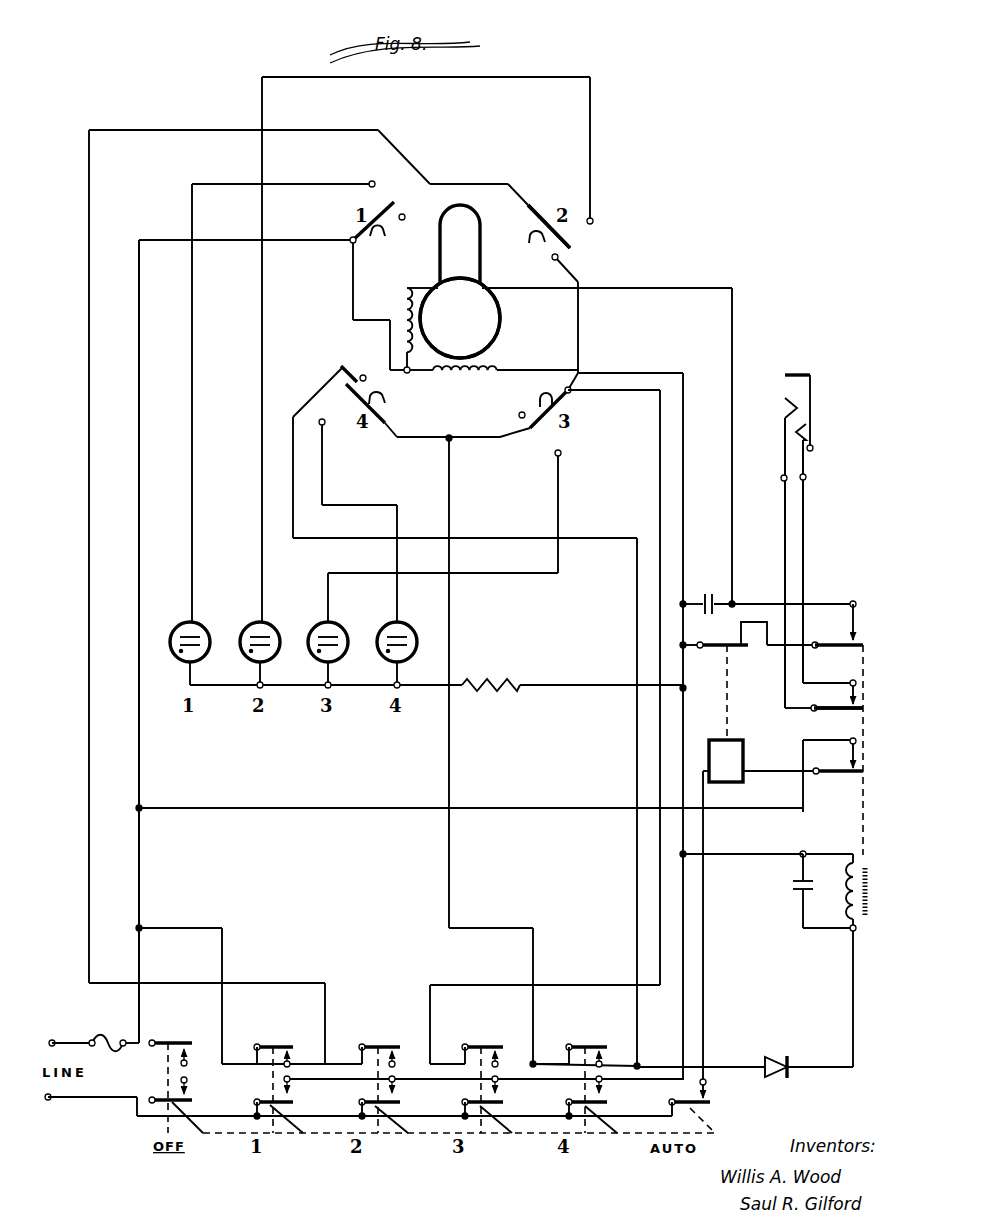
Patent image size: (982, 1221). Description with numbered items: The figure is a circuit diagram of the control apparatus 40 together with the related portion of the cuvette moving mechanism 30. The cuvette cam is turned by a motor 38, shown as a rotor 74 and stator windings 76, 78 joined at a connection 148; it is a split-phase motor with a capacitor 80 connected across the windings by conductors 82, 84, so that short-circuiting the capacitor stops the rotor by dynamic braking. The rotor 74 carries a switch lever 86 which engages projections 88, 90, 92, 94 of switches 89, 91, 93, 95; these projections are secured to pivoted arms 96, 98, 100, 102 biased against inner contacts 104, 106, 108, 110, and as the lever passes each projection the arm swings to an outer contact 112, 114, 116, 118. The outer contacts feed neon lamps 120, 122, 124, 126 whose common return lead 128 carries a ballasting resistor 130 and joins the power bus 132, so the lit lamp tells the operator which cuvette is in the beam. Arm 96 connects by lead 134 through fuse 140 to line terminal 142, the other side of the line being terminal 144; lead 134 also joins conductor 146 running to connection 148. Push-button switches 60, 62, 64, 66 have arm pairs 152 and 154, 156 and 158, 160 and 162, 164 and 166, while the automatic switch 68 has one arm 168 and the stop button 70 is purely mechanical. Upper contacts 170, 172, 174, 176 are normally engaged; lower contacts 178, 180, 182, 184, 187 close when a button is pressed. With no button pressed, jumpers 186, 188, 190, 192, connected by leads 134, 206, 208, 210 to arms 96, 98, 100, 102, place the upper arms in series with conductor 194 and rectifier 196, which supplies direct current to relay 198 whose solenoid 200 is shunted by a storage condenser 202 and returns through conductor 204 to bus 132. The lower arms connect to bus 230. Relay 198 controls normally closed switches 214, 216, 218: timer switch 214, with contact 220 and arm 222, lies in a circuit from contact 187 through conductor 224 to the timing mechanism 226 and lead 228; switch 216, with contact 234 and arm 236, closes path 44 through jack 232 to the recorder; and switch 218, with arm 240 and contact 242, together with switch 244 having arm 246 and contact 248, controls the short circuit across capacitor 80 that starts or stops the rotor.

The cuvette moving mechanism 30 is at (606, 128).
The motor 38 is at (522, 300).
The control apparatus 40 is at (165, 1168).
The conducting path 44 is at (802, 530).
The switch button 60 is at (237, 1140).
The switch button 62 is at (343, 1148).
The switch button 64 is at (478, 1150).
The switch button 66 is at (607, 1148).
The automatic switch button 68 is at (718, 1108).
The stop button 70 is at (160, 1050).
The rotor 74 is at (502, 318).
The stator winding 76 is at (405, 305).
The stator winding 78 is at (470, 377).
The capacitor 80 is at (705, 594).
The conductor 82 is at (683, 373).
The conductor 84 is at (732, 288).
The switch lever 86 is at (483, 226).
The projection 88 is at (386, 236).
The switch 89 is at (412, 160).
The projection 90 is at (532, 238).
The switch 91 is at (587, 246).
The projection 92 is at (540, 398).
The switch 93 is at (572, 400).
The projection 94 is at (386, 405).
The switch 95 is at (380, 428).
The pivoted arm 96 is at (372, 178).
The pivoted arm 98 is at (572, 250).
The pivoted arm 100 is at (545, 432).
The pivoted arm 102 is at (340, 366).
The inner contact 104 is at (404, 214).
The inner contact 106 is at (555, 260).
The inner contact 108 is at (519, 415).
The inner contact 110 is at (364, 375).
The outer contact 112 is at (383, 197).
The outer contact 114 is at (590, 216).
The outer contact 116 is at (556, 456).
The outer contact 118 is at (325, 425).
The gaseous discharge lamp 120 is at (207, 630).
The gaseous discharge lamp 122 is at (277, 630).
The gaseous discharge lamp 124 is at (345, 630).
The gaseous discharge lamp 126 is at (412, 630).
The common current return lead 128 is at (430, 688).
The series ballasting resistor 130 is at (500, 682).
The power bus 132 is at (683, 740).
The lead 134 is at (142, 500).
The fuse 140 is at (108, 1040).
The line terminal 142 is at (54, 1040).
The line terminal 144 is at (50, 1100).
The conductor 146 is at (350, 287).
The connection 148 is at (408, 373).
The arm 152 is at (280, 1044).
The arm 154 is at (273, 1108).
The arm 156 is at (380, 1044).
The arm 158 is at (378, 1108).
The arm 160 is at (487, 1044).
The arm 162 is at (483, 1108).
The arm 164 is at (590, 1044).
The arm 166 is at (585, 1108).
The arm 168 is at (712, 1102).
The upper contact 170 is at (293, 1061).
The upper contact 172 is at (400, 1060).
The upper contact 174 is at (500, 1056).
The upper contact 176 is at (604, 1058).
The lower contact 178 is at (291, 1082).
The lower contact 180 is at (396, 1084).
The lower contact 182 is at (499, 1085).
The lower contact 184 is at (603, 1085).
The jumper 186 is at (243, 1062).
The lower contact 187 is at (706, 1078).
The jumper 188 is at (342, 1060).
The jumper 190 is at (444, 1062).
The jumper 192 is at (538, 1062).
The conductor 194 is at (683, 852).
The rectifier 196 is at (777, 1060).
The D.C. relay 198 is at (828, 922).
The solenoid 200 is at (848, 882).
The storage condenser 202 is at (795, 893).
The return conductor 204 is at (752, 856).
The lead 206 is at (88, 625).
The lead 208 is at (658, 772).
The lead 210 is at (452, 792).
The timer switch 214 is at (817, 757).
The switch 216 is at (785, 707).
The switch 218 is at (853, 600).
The contact 220 is at (865, 754).
The arm 222 is at (830, 776).
The conductor 224 is at (704, 968).
The timing mechanism 226 is at (728, 783).
The lead 228 is at (385, 808).
The bus 230 is at (435, 1118).
The jack 232 is at (843, 348).
The contact 234 is at (852, 680).
The arm 236 is at (843, 711).
The arm 240 is at (815, 640).
The contact 242 is at (855, 630).
The switch 244 is at (716, 656).
The arm 246 is at (740, 643).
The contact 248 is at (740, 640).